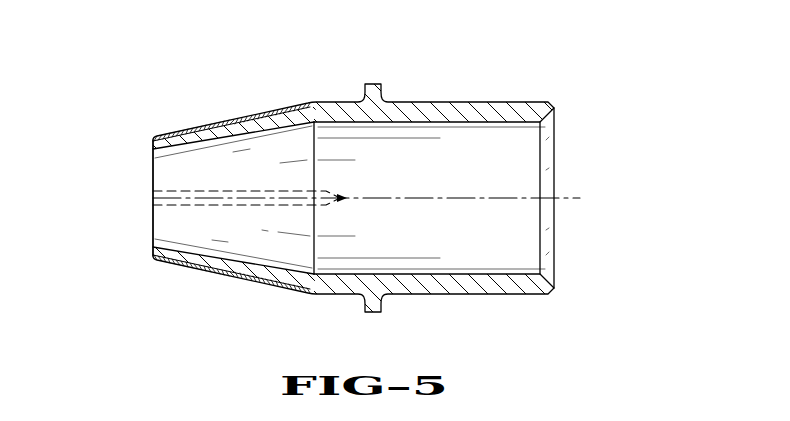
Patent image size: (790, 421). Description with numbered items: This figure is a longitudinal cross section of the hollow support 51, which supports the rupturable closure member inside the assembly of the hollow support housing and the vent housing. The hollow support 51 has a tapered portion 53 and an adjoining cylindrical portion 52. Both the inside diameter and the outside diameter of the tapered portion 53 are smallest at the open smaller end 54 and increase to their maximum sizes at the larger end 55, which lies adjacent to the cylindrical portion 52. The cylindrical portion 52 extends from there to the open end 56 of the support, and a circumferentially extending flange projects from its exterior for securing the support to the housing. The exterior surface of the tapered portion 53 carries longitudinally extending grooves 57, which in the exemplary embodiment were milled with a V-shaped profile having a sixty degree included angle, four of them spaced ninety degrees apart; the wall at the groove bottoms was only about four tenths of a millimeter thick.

The hollow support 51 is at (600, 63).
The cylindrical portion 52 is at (455, 287).
The tapered portion 53 is at (195, 143).
The open smaller end 54 is at (155, 145).
The larger end 55 is at (313, 150).
The open end 56 is at (555, 247).
The longitudinally extending grooves 57 is at (226, 127).